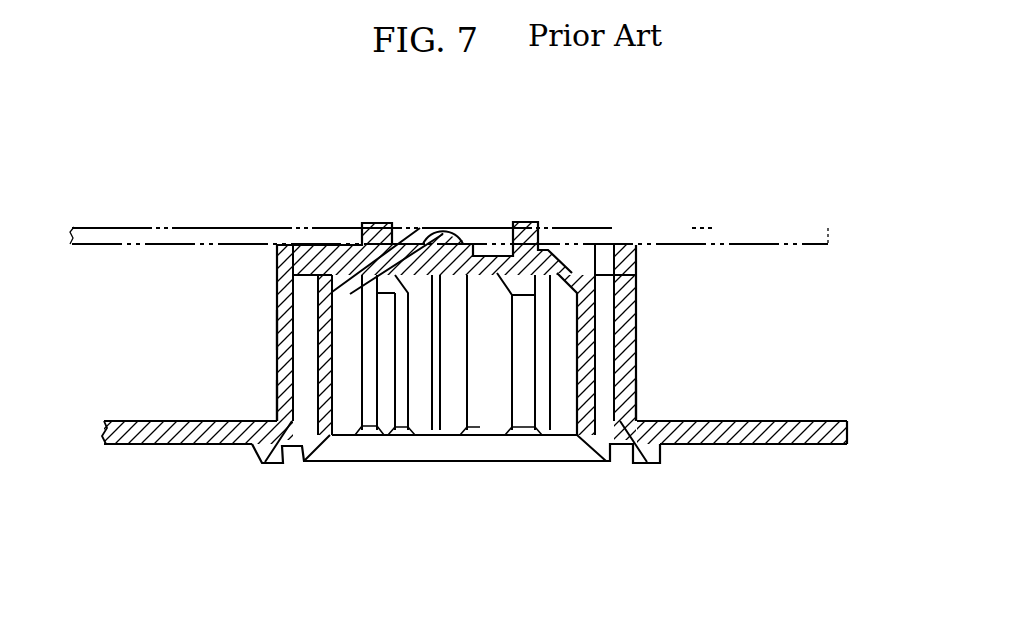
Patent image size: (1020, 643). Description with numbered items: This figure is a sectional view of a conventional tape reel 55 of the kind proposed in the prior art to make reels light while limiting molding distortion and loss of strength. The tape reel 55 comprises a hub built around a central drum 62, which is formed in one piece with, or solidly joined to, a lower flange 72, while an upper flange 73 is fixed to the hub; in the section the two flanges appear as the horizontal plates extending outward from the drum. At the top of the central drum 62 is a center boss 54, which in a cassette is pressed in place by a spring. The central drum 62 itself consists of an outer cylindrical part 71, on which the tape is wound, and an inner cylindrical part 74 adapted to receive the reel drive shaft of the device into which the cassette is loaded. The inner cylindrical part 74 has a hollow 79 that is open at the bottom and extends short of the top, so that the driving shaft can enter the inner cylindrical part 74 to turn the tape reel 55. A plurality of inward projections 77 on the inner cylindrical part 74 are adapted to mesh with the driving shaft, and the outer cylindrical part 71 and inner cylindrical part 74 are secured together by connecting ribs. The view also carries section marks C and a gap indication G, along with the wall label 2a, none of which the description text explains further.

The tape reel 55 is at (720, 188).
The upper flange 73 is at (792, 228).
The lower flange 72 is at (834, 444).
The central drum 62 is at (275, 291).
The housing side wall 2a is at (277, 331).
The outer cylindrical part 71 is at (640, 341).
The center boss 54 is at (445, 212).
The inward projections 77 is at (412, 412).
The hollow 79 is at (520, 418).
The inner cylindrical part 74 is at (518, 377).
The section line C- C is at (446, 226).
The gap G is at (525, 220).